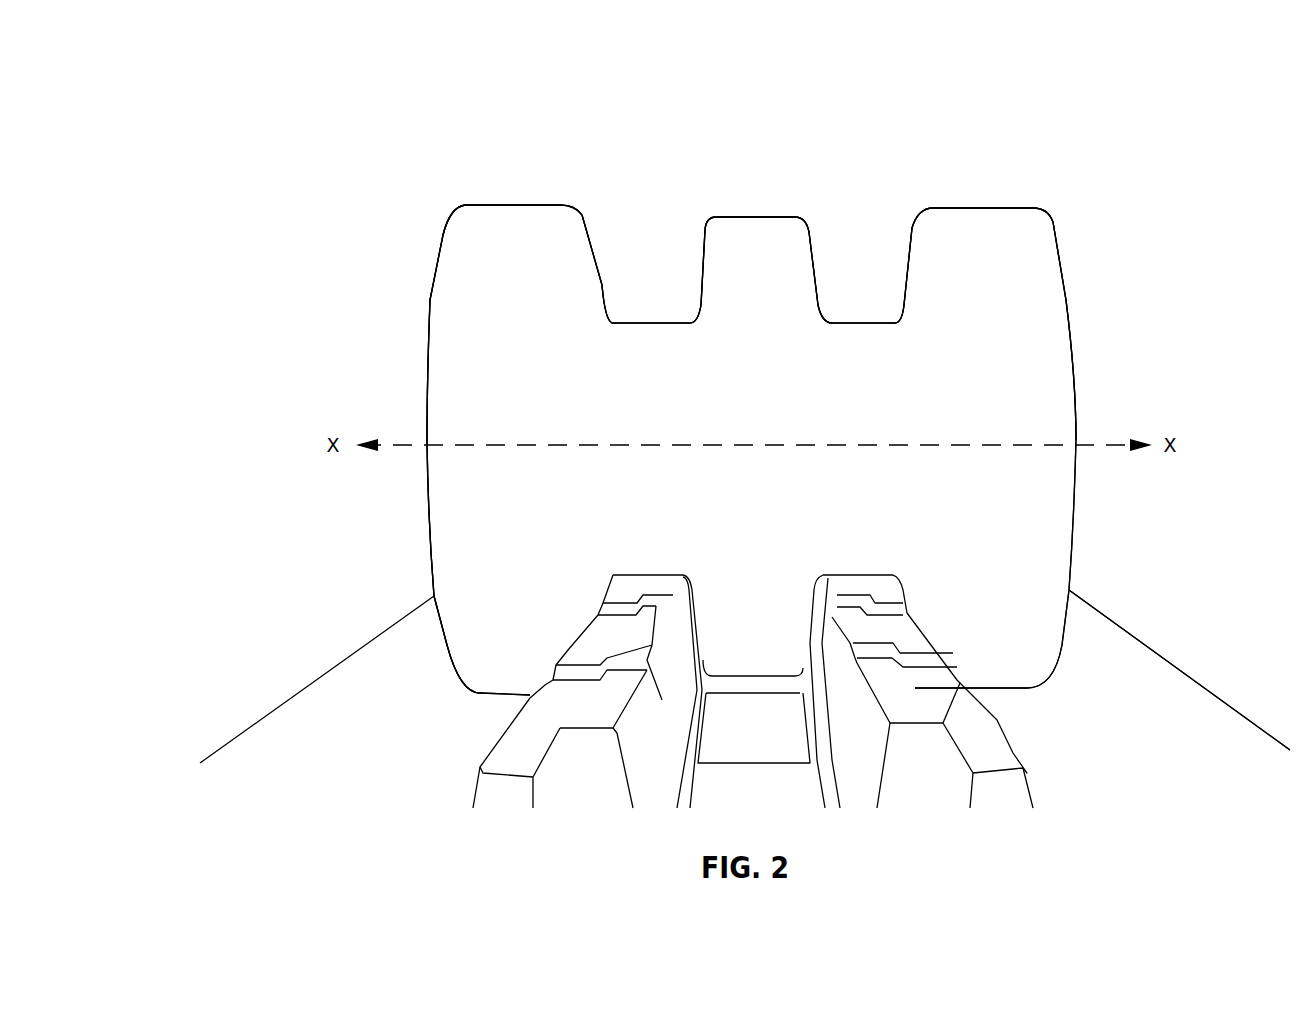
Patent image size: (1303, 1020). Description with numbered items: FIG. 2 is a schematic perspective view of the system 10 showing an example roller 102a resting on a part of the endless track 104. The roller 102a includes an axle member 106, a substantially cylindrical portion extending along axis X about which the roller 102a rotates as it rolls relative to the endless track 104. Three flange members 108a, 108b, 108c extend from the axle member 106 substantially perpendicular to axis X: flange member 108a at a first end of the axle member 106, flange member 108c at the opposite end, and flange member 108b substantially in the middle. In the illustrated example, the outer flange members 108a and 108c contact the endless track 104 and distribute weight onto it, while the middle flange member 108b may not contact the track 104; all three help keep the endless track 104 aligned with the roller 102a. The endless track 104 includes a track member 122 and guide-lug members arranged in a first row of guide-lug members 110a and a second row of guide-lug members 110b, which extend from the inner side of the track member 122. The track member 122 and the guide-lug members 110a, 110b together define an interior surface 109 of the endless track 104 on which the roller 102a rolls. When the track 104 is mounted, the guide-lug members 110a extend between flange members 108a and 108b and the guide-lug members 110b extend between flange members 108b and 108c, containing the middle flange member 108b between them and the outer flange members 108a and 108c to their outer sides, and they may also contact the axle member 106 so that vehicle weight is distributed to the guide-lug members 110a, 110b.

The system 10 is at (1037, 110).
The roller 102a is at (1092, 244).
The endless track 104 is at (1140, 611).
The axle member 106 is at (440, 405).
The flange member 108a is at (532, 658).
The flange member 108b is at (780, 637).
The flange member 108c is at (1004, 638).
The interior surface 109 is at (1177, 718).
The guide-lug members 110a is at (632, 768).
The guide-lug members 110b is at (923, 703).
The track member 122 is at (300, 712).